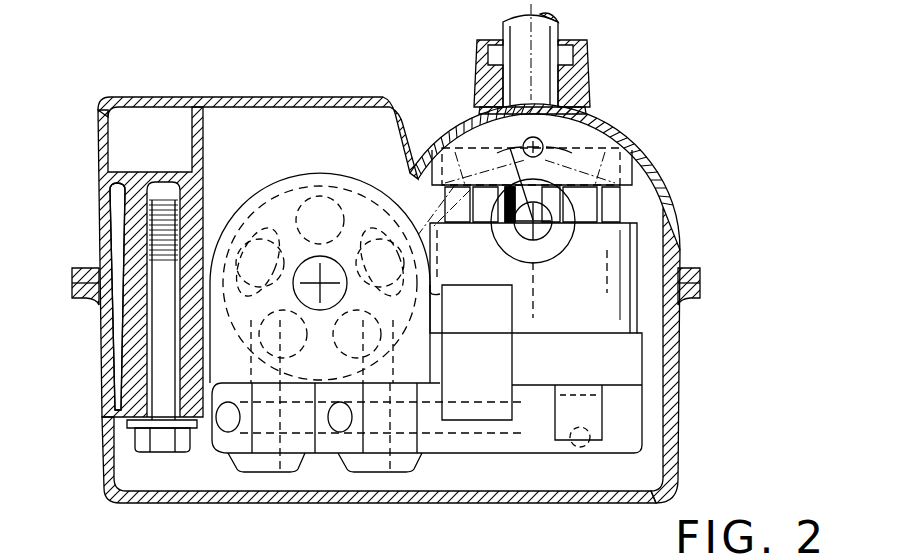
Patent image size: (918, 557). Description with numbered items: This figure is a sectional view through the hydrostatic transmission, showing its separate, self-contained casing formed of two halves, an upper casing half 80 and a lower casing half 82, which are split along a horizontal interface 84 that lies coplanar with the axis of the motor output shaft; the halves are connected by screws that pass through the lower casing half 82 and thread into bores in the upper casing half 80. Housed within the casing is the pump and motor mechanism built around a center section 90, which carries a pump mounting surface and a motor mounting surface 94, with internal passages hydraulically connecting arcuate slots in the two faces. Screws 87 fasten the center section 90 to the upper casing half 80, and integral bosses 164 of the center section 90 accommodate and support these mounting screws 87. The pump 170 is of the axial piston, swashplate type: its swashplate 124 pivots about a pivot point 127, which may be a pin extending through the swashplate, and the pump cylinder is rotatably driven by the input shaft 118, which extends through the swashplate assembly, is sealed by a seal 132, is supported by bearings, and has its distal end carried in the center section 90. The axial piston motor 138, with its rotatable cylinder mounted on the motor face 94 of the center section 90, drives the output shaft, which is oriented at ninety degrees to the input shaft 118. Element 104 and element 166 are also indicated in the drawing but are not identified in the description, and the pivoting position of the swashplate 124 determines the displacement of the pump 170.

The upper casing half 80 is at (98, 228).
The lower casing half 82 is at (98, 362).
The horizontal interface 84 is at (72, 285).
The screws 87 is at (128, 412).
The center section 90 is at (492, 447).
The motor mounting surface 94 is at (285, 195).
The bottom mounting portion 104 is at (378, 556).
The input shaft 118 is at (548, 33).
The swashplate 124 is at (580, 152).
The pivot point 127 is at (555, 127).
The seal 132 is at (563, 53).
The axial piston motor 138 is at (333, 187).
The integral bosses 164 is at (157, 378).
The drive block 166 is at (538, 232).
The pump 170 is at (640, 271).